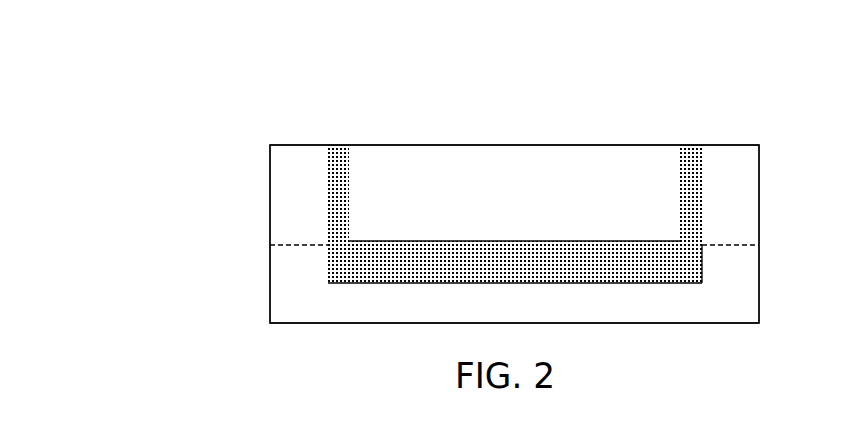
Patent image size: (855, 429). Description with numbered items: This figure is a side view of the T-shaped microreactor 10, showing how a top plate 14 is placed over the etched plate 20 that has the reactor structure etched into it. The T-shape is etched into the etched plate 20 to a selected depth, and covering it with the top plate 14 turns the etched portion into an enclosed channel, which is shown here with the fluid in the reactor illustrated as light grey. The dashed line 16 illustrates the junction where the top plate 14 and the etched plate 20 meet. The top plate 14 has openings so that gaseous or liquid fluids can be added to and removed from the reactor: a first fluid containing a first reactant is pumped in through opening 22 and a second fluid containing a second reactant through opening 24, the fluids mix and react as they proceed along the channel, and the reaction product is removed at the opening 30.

The T-shaped microreactor 10 is at (193, 67).
The top plate 14 is at (270, 182).
The dashed line 16 is at (242, 243).
The etched plate 20 is at (252, 300).
The opening 22 is at (349, 114).
The opening 24 is at (349, 114).
The opening 30 is at (681, 114).